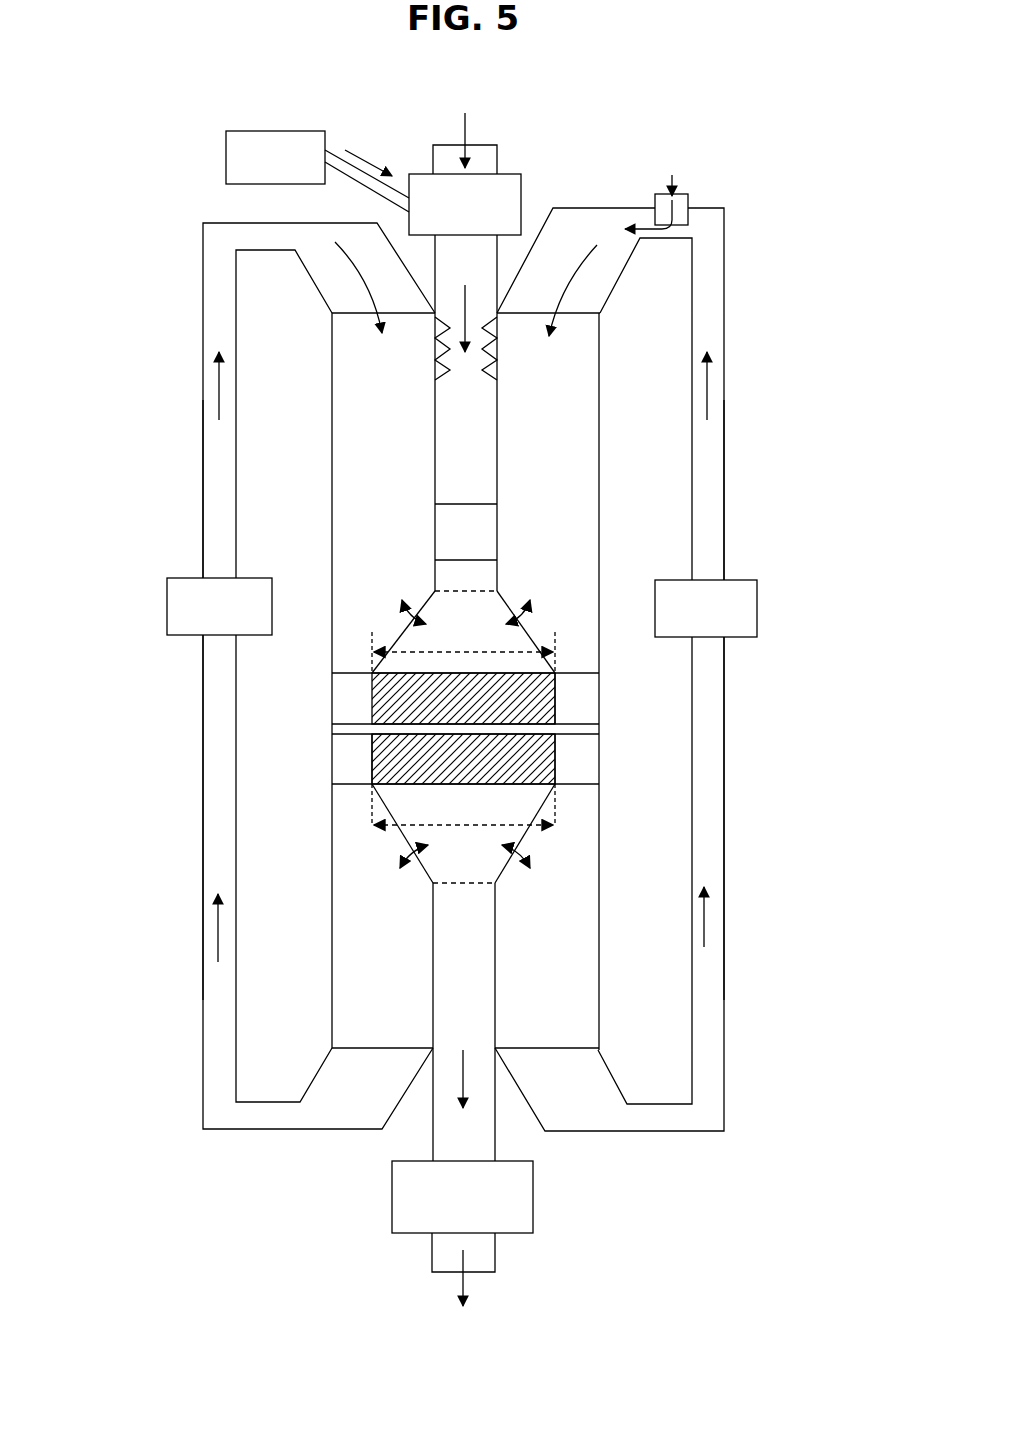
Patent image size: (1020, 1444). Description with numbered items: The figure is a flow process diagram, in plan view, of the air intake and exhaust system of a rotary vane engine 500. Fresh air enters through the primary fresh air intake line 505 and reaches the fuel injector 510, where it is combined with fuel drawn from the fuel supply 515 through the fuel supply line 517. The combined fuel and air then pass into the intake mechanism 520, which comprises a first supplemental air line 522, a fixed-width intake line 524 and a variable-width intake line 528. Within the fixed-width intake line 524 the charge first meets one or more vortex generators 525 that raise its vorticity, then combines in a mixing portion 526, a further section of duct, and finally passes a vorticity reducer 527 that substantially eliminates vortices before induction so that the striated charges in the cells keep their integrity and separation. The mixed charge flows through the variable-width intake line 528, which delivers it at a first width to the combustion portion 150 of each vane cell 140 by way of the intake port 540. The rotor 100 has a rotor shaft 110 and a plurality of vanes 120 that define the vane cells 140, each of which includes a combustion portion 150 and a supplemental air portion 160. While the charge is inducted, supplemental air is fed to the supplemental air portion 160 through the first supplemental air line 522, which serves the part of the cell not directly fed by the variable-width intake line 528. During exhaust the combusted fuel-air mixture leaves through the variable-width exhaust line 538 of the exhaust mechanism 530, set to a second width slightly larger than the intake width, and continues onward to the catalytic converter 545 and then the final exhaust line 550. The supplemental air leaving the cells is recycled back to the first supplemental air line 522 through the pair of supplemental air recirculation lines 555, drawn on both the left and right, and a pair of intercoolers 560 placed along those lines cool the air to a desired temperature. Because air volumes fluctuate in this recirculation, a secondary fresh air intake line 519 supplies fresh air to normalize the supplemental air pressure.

The rotary vane engine 500 is at (133, 80).
The primary fresh air intake line 505 is at (497, 165).
The fuel injector 510 is at (521, 200).
The fuel supply 515 is at (272, 130).
The fuel supply line 517 is at (360, 188).
The secondary fresh air intake line 519 is at (688, 200).
The intake mechanism 520 is at (330, 412).
The first supplemental air line 522 is at (343, 588).
The fixed-width intake line 524 is at (498, 473).
The vortex generators 525 is at (438, 375).
The mixing portion 526 is at (442, 475).
The vorticity reducer 527 is at (432, 537).
The variable-width intake line 528 is at (533, 636).
The exhaust mechanism 530 is at (599, 910).
The variable-width exhaust line 538 is at (515, 833).
The intake port 540 is at (347, 672).
The catalytic converter 545 is at (350, 785).
The final exhaust line 550 is at (495, 1255).
The supplemental air recirculation lines 555 is at (203, 973).
The intercoolers 560 is at (167, 608).
The rotor 100 is at (328, 695).
The rotor shaft 110 is at (590, 702).
The vanes 120 is at (338, 730).
The vane cells 140 is at (340, 768).
The combustion portion 150 is at (538, 752).
The supplemental air portion 160 is at (590, 768).